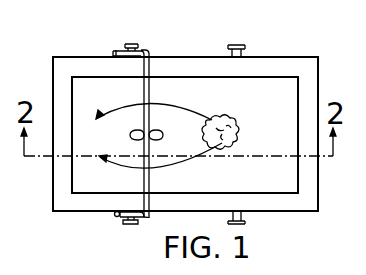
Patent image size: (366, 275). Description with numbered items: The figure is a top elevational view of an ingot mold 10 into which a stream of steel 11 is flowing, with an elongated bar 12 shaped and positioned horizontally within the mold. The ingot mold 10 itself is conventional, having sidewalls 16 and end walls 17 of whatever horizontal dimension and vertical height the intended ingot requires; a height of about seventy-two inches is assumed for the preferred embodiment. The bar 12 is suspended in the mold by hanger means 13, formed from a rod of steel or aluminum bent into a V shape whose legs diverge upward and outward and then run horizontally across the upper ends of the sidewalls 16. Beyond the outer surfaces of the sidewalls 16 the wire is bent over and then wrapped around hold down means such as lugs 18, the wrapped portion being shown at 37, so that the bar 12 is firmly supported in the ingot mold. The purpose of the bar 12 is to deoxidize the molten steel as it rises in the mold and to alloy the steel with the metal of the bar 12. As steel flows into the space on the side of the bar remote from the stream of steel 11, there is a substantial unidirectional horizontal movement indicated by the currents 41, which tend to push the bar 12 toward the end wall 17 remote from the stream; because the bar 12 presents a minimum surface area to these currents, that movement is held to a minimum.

The ingot mold 10 is at (191, 57).
The stream of steel 11 is at (236, 125).
The elongated bar 12 is at (176, 115).
The hanger means 13 is at (148, 108).
The sidewalls 16 is at (281, 62).
The end walls 17 is at (62, 178).
The lugs 18 is at (136, 43).
The wire bent around lugs 37 is at (121, 219).
The currents 41 is at (118, 108).